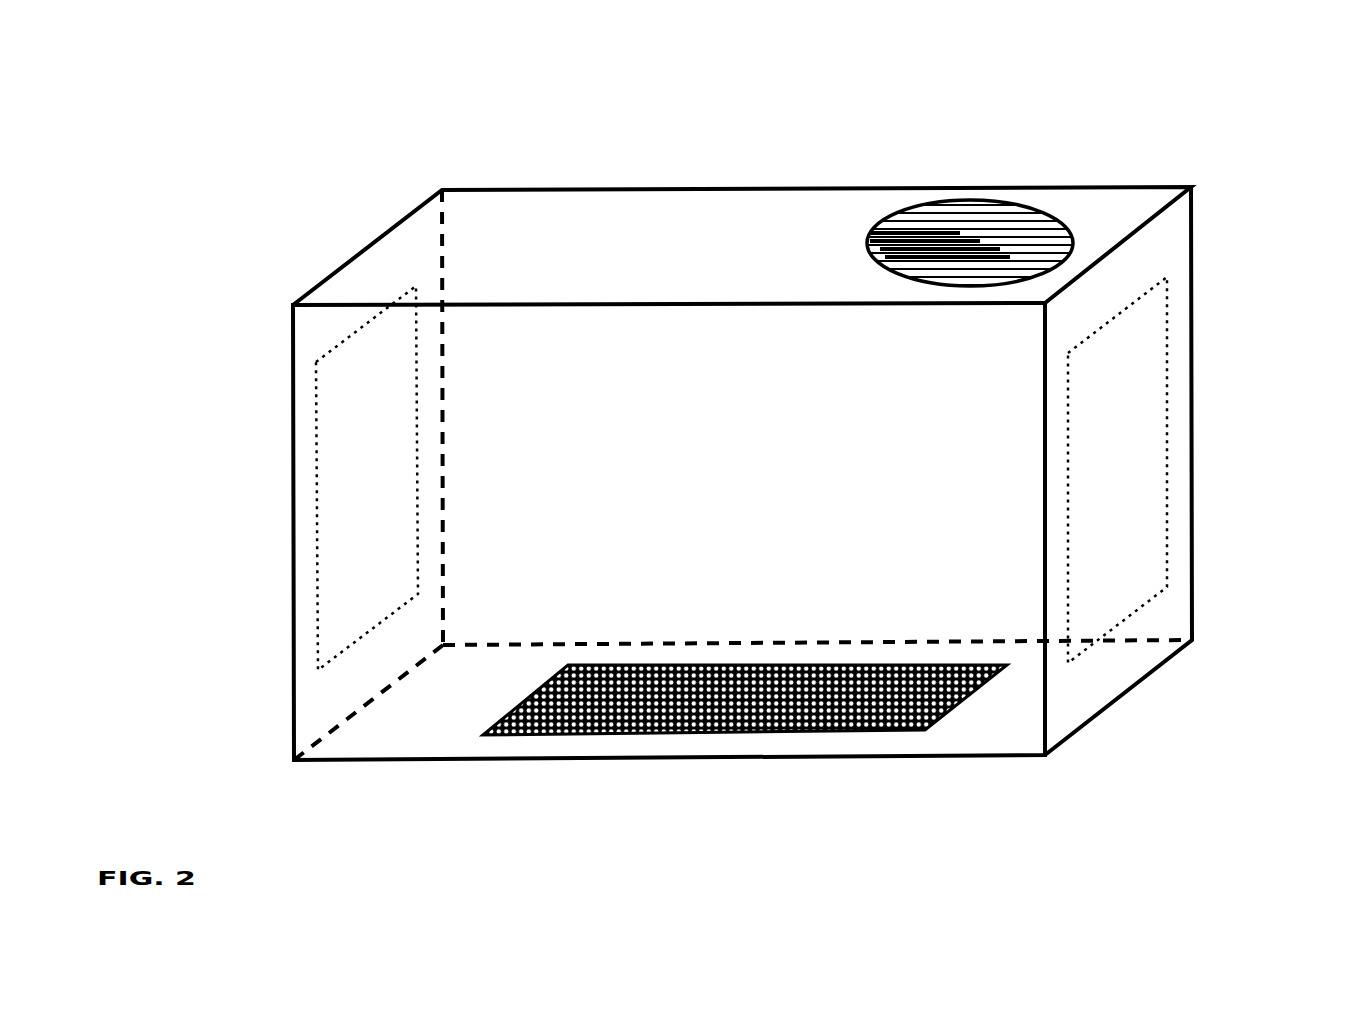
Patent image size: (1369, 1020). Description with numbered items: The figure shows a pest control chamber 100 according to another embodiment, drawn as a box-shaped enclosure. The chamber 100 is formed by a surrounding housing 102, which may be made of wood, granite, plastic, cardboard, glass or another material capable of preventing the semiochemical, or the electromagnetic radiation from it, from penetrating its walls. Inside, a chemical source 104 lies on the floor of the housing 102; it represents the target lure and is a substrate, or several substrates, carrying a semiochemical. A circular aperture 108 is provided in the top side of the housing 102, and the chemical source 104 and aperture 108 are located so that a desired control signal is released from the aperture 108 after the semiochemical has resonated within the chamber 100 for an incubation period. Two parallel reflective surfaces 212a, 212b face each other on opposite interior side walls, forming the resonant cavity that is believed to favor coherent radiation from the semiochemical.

The pest control chamber 100 is at (515, 155).
The housing 102 is at (323, 705).
The chemical source 104 is at (937, 713).
The aperture 108 is at (1050, 215).
The reflective surface 212a is at (344, 457).
The reflective surface 212b is at (1150, 335).